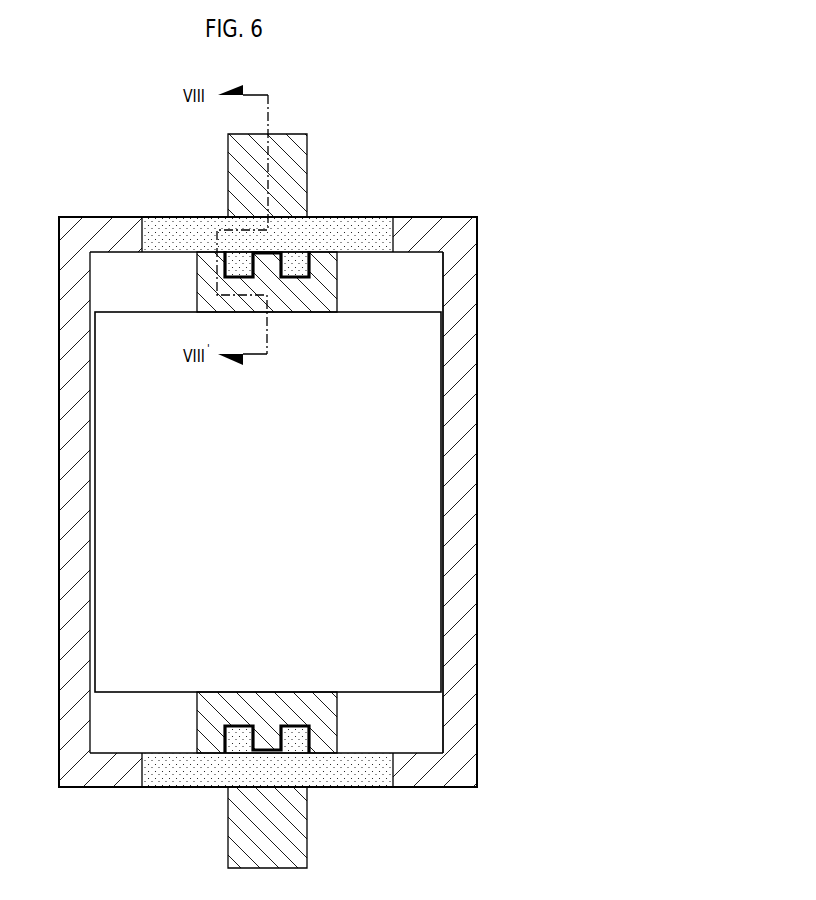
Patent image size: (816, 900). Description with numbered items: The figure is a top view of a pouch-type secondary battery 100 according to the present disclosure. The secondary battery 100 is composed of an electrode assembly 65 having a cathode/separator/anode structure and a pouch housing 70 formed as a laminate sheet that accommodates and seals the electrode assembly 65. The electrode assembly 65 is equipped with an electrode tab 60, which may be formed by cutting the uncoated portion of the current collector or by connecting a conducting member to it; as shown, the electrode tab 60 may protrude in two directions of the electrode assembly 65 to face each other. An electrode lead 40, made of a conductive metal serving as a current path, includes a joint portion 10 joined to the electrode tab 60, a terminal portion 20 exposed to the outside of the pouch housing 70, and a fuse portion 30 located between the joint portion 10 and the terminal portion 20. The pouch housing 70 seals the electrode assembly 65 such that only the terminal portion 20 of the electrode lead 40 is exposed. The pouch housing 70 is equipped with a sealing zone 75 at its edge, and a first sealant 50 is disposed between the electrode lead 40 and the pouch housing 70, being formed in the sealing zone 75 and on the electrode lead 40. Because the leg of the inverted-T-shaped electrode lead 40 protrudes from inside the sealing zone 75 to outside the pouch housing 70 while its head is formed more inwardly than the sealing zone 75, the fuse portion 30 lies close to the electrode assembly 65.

The pouch-type secondary battery 100 is at (449, 138).
The joint portion 10 is at (207, 287).
The terminal portion 20 is at (237, 158).
The fuse portion 30 is at (212, 244).
The electrode lead 40 is at (162, 287).
The first sealant 50 is at (364, 217).
The electrode tab 60 is at (305, 287).
The electrode assembly 65 is at (400, 318).
The pouch housing 70 is at (422, 217).
The sealing zone 75 is at (460, 228).